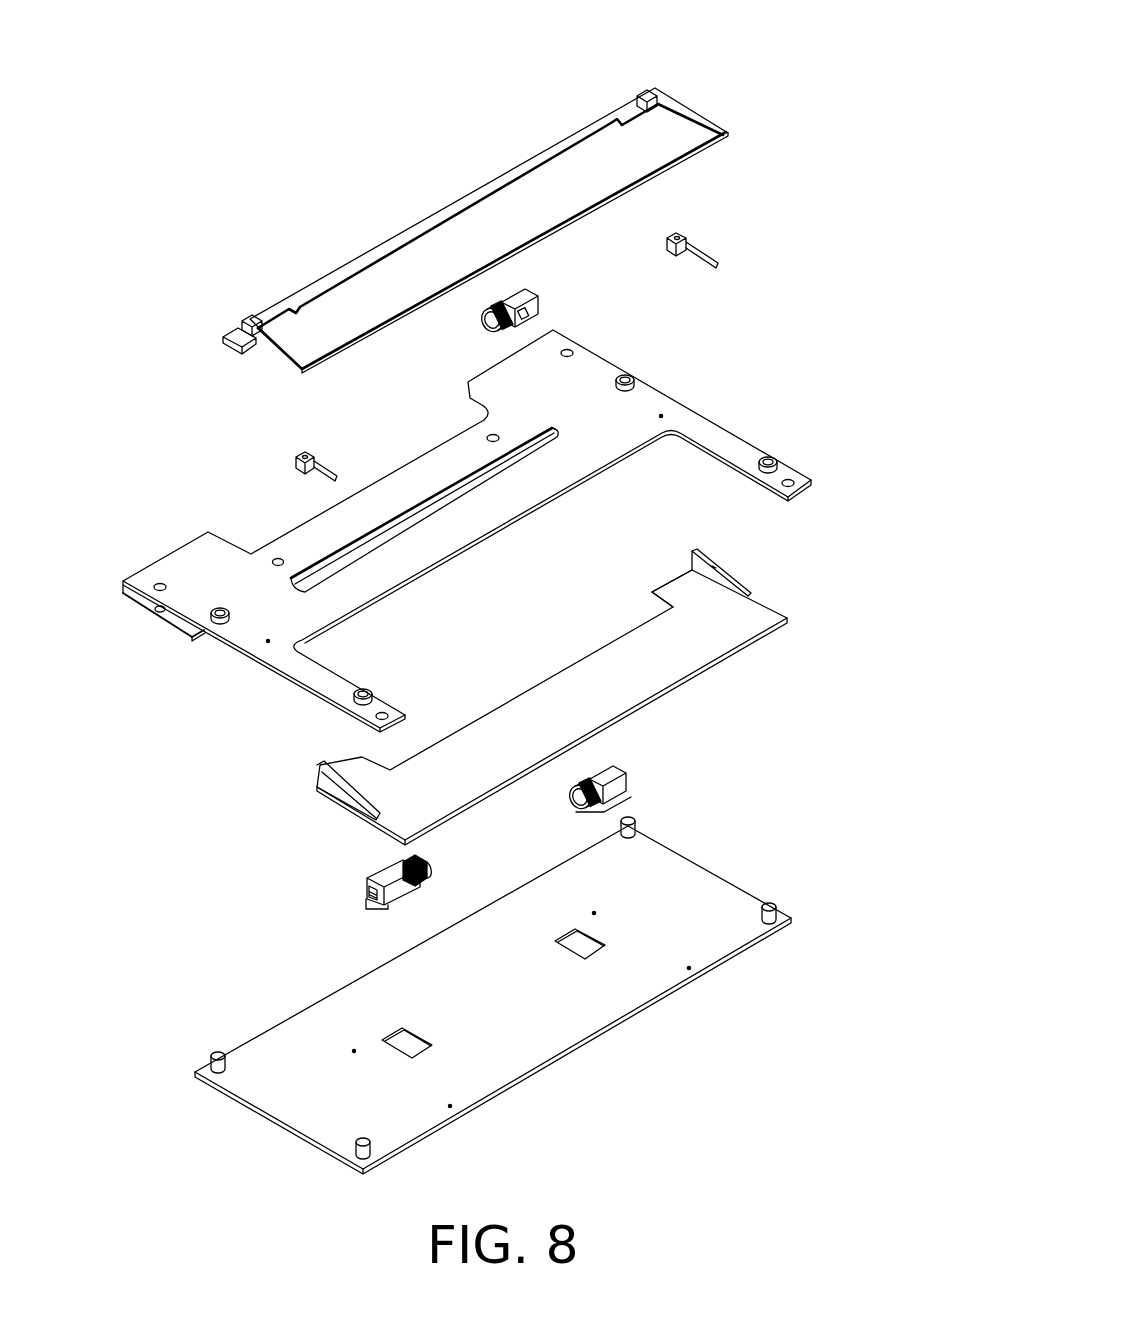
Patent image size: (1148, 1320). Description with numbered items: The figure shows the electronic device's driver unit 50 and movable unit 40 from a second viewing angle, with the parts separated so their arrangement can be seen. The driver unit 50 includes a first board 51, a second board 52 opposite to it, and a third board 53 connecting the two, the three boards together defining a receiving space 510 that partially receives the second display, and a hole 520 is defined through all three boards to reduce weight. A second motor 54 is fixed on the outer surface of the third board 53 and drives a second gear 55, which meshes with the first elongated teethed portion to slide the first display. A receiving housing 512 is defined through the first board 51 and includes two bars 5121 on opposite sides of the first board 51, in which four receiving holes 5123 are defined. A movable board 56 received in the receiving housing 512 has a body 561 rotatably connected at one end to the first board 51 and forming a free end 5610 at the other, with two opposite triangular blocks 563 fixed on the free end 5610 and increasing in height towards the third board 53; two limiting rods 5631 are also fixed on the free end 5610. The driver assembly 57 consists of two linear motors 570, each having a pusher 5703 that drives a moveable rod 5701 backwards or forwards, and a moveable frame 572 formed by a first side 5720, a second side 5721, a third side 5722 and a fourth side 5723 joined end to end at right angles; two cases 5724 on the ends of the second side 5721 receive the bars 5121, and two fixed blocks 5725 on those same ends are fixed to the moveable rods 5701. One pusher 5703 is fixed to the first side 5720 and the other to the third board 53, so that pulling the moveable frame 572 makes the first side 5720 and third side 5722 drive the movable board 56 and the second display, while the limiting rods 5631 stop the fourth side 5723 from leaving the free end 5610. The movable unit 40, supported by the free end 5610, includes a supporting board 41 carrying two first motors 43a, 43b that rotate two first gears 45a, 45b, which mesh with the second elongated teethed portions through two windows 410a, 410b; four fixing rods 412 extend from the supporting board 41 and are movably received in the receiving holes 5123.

The movable unit 40 is at (772, 744).
The supporting board 41 is at (689, 889).
The window 410a is at (596, 948).
The window 410b is at (402, 1044).
The fixing rod 412 is at (777, 907).
The first motor 43a is at (628, 776).
The first motor 43b is at (419, 868).
The first gear 45a is at (570, 785).
The first gear 45b is at (371, 884).
The driver unit 50 is at (762, 299).
The first board 51 is at (187, 561).
The receiving space 510 is at (147, 603).
The receiving housing 512 is at (363, 647).
The bar 5121 is at (710, 437).
The receiving hole 5123 is at (772, 462).
The second board 52 is at (180, 636).
The third board 53 is at (122, 592).
The hole 520 is at (422, 470).
The second motor 54 is at (525, 294).
The second gear 55 is at (500, 334).
The movable board 56 is at (868, 520).
The body 561 is at (716, 635).
The free end 5610 is at (668, 591).
The triangular block 563 is at (733, 579).
The limiting rod 5631 is at (696, 550).
The driver assembly 57 is at (878, 75).
The linear motor 570 is at (803, 155).
The moveable rod 5701 is at (699, 252).
The pusher 5703 is at (679, 233).
The moveable frame 572 is at (733, 120).
The first side 5720 is at (282, 360).
The second side 5721 is at (392, 243).
The third side 5722 is at (687, 113).
The fourth side 5723 is at (571, 227).
The case 5724 is at (226, 343).
The fixed block 5725 is at (252, 316).